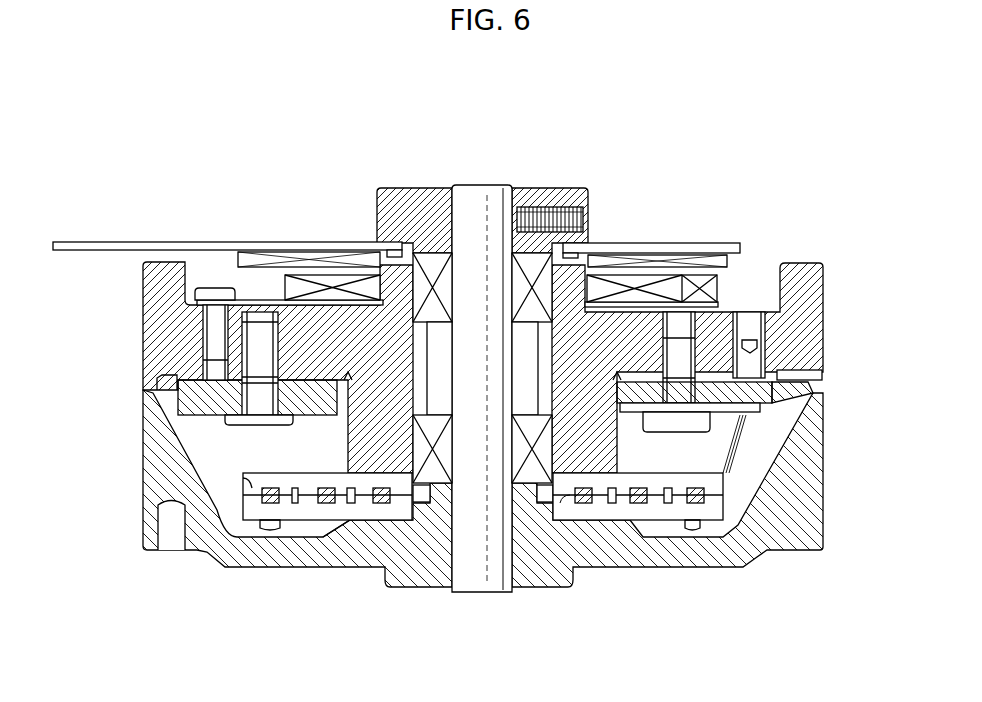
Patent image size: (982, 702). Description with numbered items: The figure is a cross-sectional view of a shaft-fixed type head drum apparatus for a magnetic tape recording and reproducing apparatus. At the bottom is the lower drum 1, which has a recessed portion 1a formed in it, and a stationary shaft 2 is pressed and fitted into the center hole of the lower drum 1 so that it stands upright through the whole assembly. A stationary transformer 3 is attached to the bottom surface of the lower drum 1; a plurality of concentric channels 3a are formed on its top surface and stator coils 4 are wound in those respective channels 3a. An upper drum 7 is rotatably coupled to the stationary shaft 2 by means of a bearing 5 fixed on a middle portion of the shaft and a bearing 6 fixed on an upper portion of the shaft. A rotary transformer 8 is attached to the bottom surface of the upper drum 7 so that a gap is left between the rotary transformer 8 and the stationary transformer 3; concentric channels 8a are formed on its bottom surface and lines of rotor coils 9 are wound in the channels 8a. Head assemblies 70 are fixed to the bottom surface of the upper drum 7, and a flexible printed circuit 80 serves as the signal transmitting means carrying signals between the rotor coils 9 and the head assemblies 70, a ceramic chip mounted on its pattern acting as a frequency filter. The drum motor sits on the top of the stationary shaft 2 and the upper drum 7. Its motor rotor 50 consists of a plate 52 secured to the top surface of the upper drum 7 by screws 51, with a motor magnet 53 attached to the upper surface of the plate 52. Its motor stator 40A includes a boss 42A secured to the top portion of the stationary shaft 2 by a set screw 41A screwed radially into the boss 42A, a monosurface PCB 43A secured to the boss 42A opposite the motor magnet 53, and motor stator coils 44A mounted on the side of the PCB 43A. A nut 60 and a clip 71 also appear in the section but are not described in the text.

The lower drum 1 is at (150, 443).
The recessed portion 1a is at (288, 537).
The stationary shaft 2 is at (480, 585).
The stationary transformer 3 is at (677, 520).
The concentric channels 3a is at (575, 498).
The stator coils 4 is at (585, 505).
The bearing 5 is at (432, 472).
The bearing 6 is at (431, 265).
The upper drum 7 is at (143, 350).
The rotary transformer 8 is at (252, 494).
The concentric channels 8a is at (262, 490).
The rotor coils 9 is at (250, 486).
The motor stator 40A is at (593, 172).
The set screw 41A is at (577, 218).
The boss 42A is at (538, 190).
The monosurface PCB 43A is at (133, 243).
The motor stator coils 44A is at (313, 255).
The motor rotor 50 is at (732, 283).
The screws 51 is at (221, 290).
The plate 52 is at (195, 302).
The motor magnet 53 is at (290, 278).
The nut 60 is at (693, 428).
The head assemblies 70 is at (780, 402).
The clip 71 is at (824, 378).
The flexible printed circuit 80 is at (748, 450).